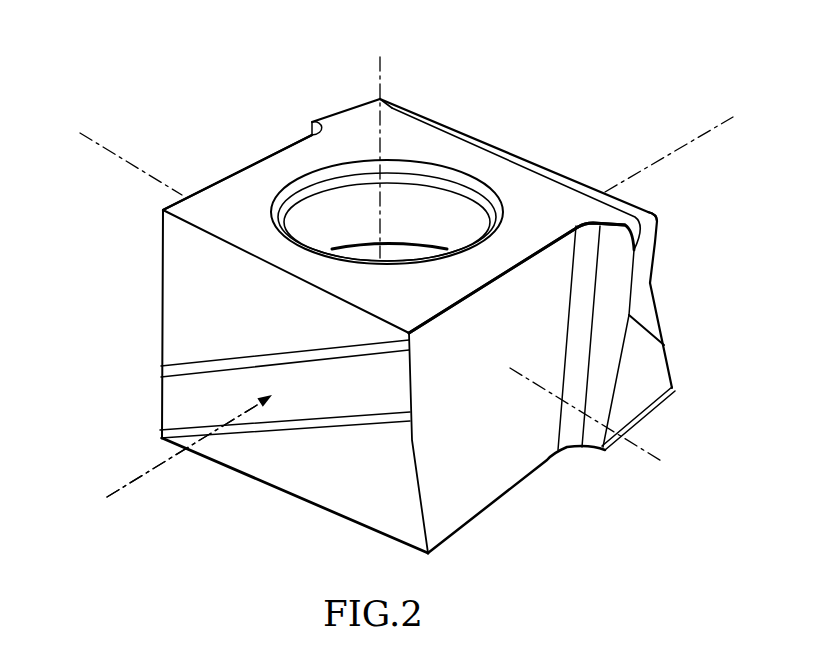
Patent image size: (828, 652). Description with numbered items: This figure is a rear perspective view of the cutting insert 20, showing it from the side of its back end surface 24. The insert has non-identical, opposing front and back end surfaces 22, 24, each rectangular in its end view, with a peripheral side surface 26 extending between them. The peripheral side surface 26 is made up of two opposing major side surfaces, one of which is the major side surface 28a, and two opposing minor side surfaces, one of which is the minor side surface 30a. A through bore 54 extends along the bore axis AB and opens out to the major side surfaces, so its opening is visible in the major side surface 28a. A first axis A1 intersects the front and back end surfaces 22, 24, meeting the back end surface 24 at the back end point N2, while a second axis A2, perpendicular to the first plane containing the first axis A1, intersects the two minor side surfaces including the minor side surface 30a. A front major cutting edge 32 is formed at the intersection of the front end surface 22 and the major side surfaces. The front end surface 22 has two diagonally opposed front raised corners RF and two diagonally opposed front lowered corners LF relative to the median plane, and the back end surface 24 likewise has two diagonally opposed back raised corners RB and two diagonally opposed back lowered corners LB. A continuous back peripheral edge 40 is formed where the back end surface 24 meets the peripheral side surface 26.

The cutting insert 20 is at (191, 160).
The front end surface 22 is at (538, 183).
The back end surface 24 is at (279, 468).
The peripheral side surface 26 is at (552, 171).
The major side surface 28a is at (245, 186).
The minor side surface 30a is at (467, 459).
The front major cutting edge 32 is at (518, 132).
The back peripheral edge 40 is at (311, 521).
The through bore 54 is at (413, 199).
The back end point N2 is at (276, 392).
The first axis A1 is at (420, 306).
The second axis A2 is at (374, 298).
The bore axis AB is at (383, 142).
The back lowered corner LB is at (460, 552).
The front lowered corner LF is at (657, 216).
The back raised corner RB is at (409, 333).
The front raised corner RF is at (386, 99).